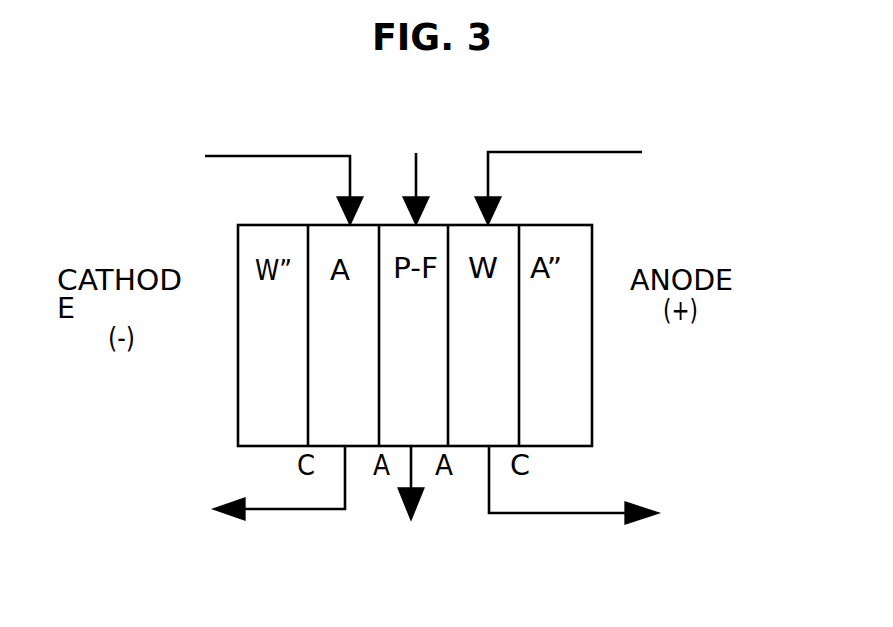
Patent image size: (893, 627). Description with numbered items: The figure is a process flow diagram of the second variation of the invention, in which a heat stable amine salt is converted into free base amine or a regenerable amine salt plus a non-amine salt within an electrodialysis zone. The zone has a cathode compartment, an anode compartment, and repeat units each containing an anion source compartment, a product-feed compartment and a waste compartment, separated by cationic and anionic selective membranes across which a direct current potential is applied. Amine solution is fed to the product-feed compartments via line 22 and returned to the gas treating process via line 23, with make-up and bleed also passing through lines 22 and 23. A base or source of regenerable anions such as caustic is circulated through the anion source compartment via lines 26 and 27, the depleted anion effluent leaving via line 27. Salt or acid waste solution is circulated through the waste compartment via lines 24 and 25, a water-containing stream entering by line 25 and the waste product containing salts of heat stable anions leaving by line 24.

The line 22 is at (412, 176).
The line 23 is at (409, 499).
The line 24 is at (574, 499).
The line 25 is at (558, 177).
The line 26 is at (284, 176).
The line 27 is at (279, 498).